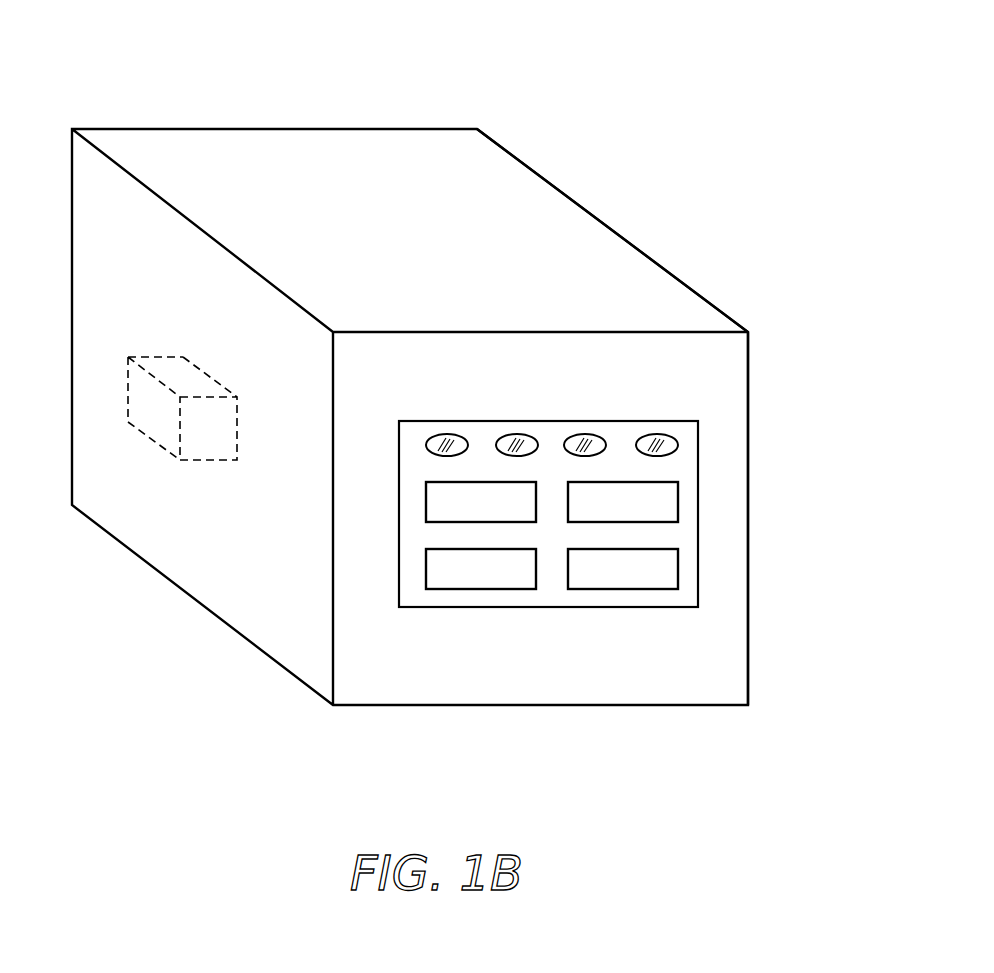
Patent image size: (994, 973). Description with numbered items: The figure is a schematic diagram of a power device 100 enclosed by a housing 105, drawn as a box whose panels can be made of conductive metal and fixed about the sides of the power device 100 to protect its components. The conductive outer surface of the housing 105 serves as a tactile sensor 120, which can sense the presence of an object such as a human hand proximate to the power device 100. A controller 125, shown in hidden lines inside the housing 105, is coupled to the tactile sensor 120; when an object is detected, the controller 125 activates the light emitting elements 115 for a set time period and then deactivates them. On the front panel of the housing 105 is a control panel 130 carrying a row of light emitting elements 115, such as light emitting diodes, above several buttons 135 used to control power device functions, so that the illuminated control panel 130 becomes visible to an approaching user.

The power device 100 is at (160, 78).
The housing 105 is at (572, 199).
The light emitting elements 115 is at (524, 436).
The tactile sensor 120 is at (630, 281).
The controller 125 is at (127, 388).
The control panel 130 is at (700, 562).
The button 135 is at (426, 498).